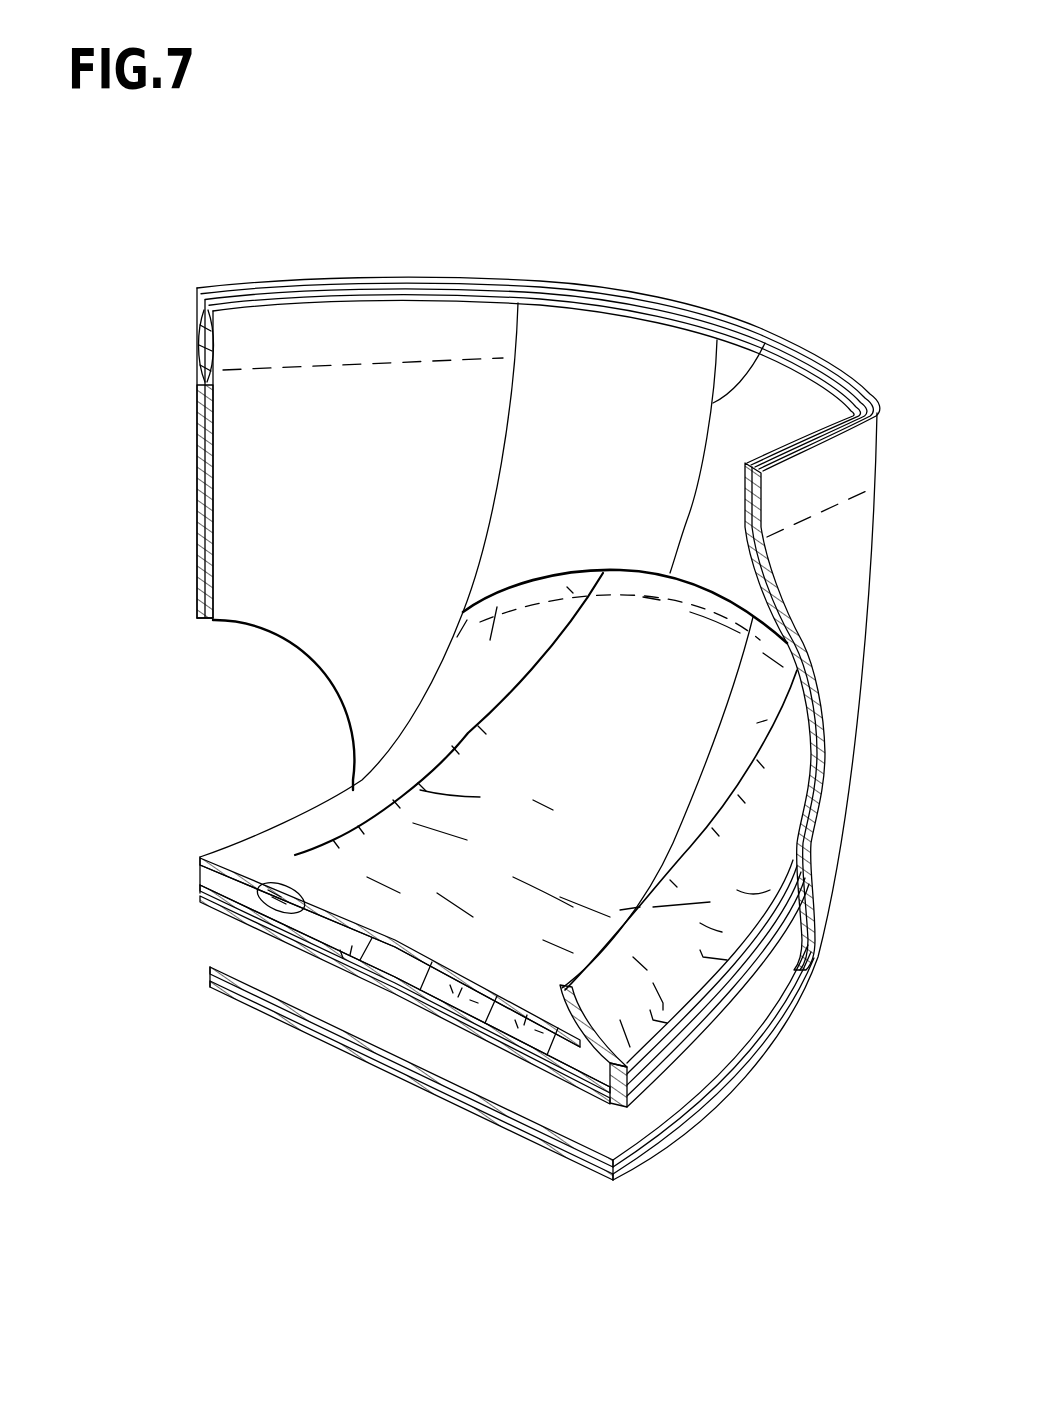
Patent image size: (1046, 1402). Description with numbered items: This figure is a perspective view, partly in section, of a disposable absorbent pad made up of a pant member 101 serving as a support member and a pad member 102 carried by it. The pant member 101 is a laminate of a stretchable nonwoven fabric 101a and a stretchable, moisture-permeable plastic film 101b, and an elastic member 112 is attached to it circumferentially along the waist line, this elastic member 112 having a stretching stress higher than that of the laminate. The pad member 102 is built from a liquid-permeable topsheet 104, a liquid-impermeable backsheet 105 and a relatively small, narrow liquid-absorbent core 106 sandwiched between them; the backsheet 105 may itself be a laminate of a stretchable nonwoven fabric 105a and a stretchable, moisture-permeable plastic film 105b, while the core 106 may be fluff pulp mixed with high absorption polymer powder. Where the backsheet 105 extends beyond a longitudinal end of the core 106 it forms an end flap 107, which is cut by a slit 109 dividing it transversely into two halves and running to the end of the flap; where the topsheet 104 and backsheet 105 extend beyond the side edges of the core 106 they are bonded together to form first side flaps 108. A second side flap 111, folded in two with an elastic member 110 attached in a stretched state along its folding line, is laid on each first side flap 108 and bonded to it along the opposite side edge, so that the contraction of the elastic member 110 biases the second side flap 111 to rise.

The pant member 101 is at (186, 436).
The stretchable nonwoven fabric 101a is at (220, 345).
The stretchable and moisture-permeable plastic film 101b is at (197, 337).
The elastic member 112 is at (198, 307).
The end flap 107 is at (615, 340).
The slit 109 is at (767, 338).
The pad member 102 is at (240, 814).
The liquid-permeable topsheet 104 is at (317, 925).
The liquid-impermeable backsheet 105 is at (459, 1198).
The stretchable nonwoven fabric 105a is at (412, 1005).
The stretchable and moisture-permeable plastic film 105b is at (490, 1013).
The liquid-absorbent core 106 is at (282, 937).
The first side flap 108 is at (587, 1077).
The elastic member 110 is at (612, 983).
The second side flap 111 is at (700, 923).